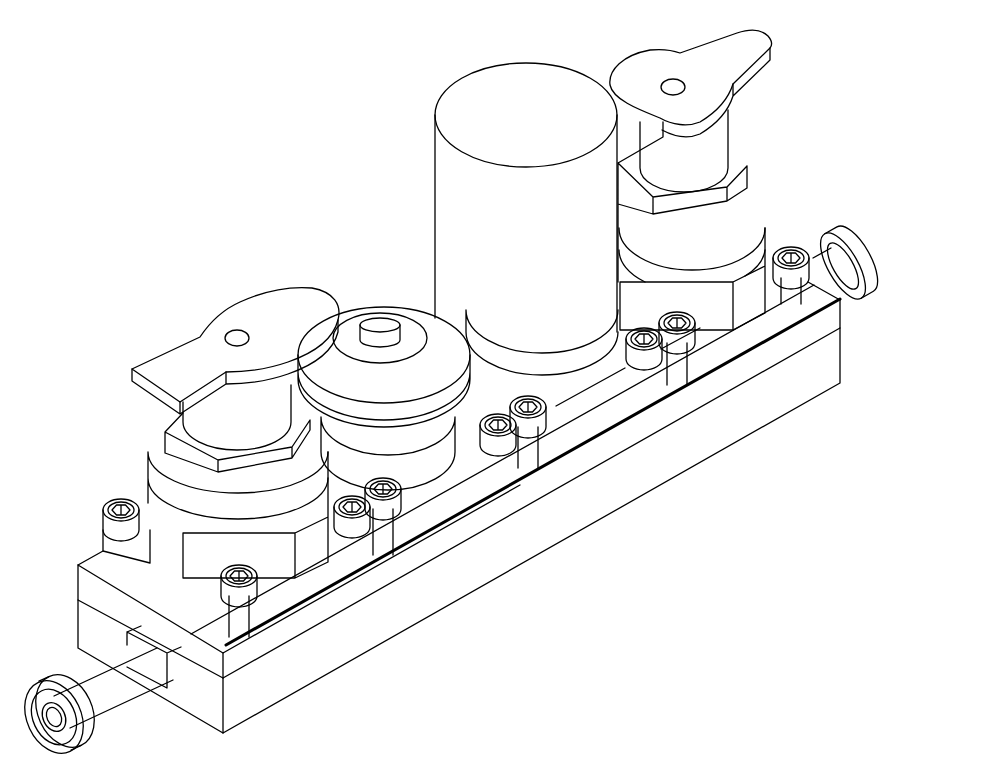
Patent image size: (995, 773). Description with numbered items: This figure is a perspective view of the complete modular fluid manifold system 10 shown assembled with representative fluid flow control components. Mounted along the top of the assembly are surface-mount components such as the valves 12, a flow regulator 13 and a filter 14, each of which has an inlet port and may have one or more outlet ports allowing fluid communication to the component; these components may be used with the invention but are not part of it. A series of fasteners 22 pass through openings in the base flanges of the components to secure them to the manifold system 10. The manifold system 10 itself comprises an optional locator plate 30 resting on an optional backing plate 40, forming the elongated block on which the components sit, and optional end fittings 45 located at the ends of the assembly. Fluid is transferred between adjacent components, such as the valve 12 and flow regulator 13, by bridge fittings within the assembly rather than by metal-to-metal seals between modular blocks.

The modular fluid manifold system 10 is at (755, 479).
The valve 12 is at (650, 72).
The flow regulator 13 is at (349, 316).
The filter 14 is at (483, 118).
The fastener 22 is at (118, 501).
The locator plate 30 is at (378, 576).
The backing plate 40 is at (363, 635).
The end fitting 45 is at (88, 683).